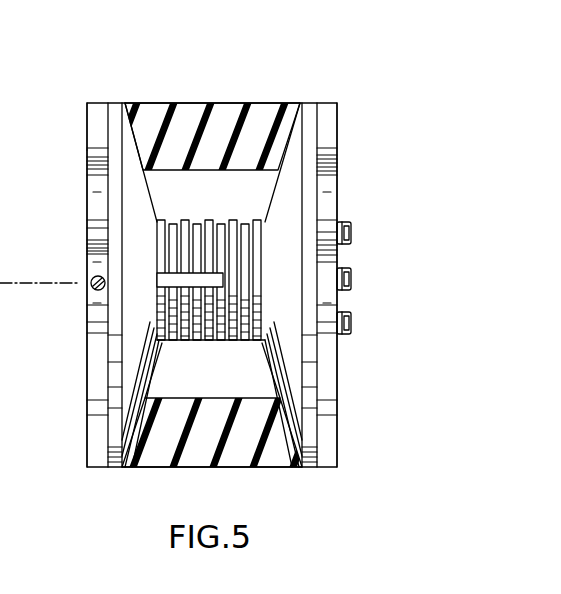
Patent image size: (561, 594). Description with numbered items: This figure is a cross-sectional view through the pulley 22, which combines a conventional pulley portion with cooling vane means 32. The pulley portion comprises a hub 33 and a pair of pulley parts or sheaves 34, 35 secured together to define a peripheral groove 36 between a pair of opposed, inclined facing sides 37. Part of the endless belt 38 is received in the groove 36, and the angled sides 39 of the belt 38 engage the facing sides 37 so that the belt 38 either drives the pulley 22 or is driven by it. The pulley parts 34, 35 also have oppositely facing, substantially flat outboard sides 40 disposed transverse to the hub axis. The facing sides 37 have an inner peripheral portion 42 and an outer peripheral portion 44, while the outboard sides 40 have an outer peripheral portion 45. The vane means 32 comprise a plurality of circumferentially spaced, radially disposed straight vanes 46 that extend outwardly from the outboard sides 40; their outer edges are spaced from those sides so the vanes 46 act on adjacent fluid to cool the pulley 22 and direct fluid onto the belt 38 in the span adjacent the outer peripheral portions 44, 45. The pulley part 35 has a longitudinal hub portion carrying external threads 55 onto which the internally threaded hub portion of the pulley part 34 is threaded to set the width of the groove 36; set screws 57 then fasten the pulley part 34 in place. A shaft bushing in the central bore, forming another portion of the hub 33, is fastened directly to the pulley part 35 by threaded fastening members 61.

The pulley 22 is at (243, 233).
The cooling vane means 32 is at (85, 362).
The hub 33 is at (221, 186).
The pulley part 34 is at (146, 389).
The pulley part 35 is at (281, 380).
The peripheral groove 36 is at (212, 384).
The facing sides 37 is at (148, 361).
The endless belt 38 is at (210, 103).
The belt sides 39 is at (125, 440).
The outboard sides 40 is at (108, 207).
The inner peripheral portion 42 is at (159, 215).
The outer peripheral portion 44 is at (122, 103).
The outer peripheral portion 45 is at (108, 103).
The vanes 46 is at (87, 158).
The external threads 55 is at (165, 247).
The set screws 57 is at (94, 288).
The threaded fastening members 61 is at (352, 232).